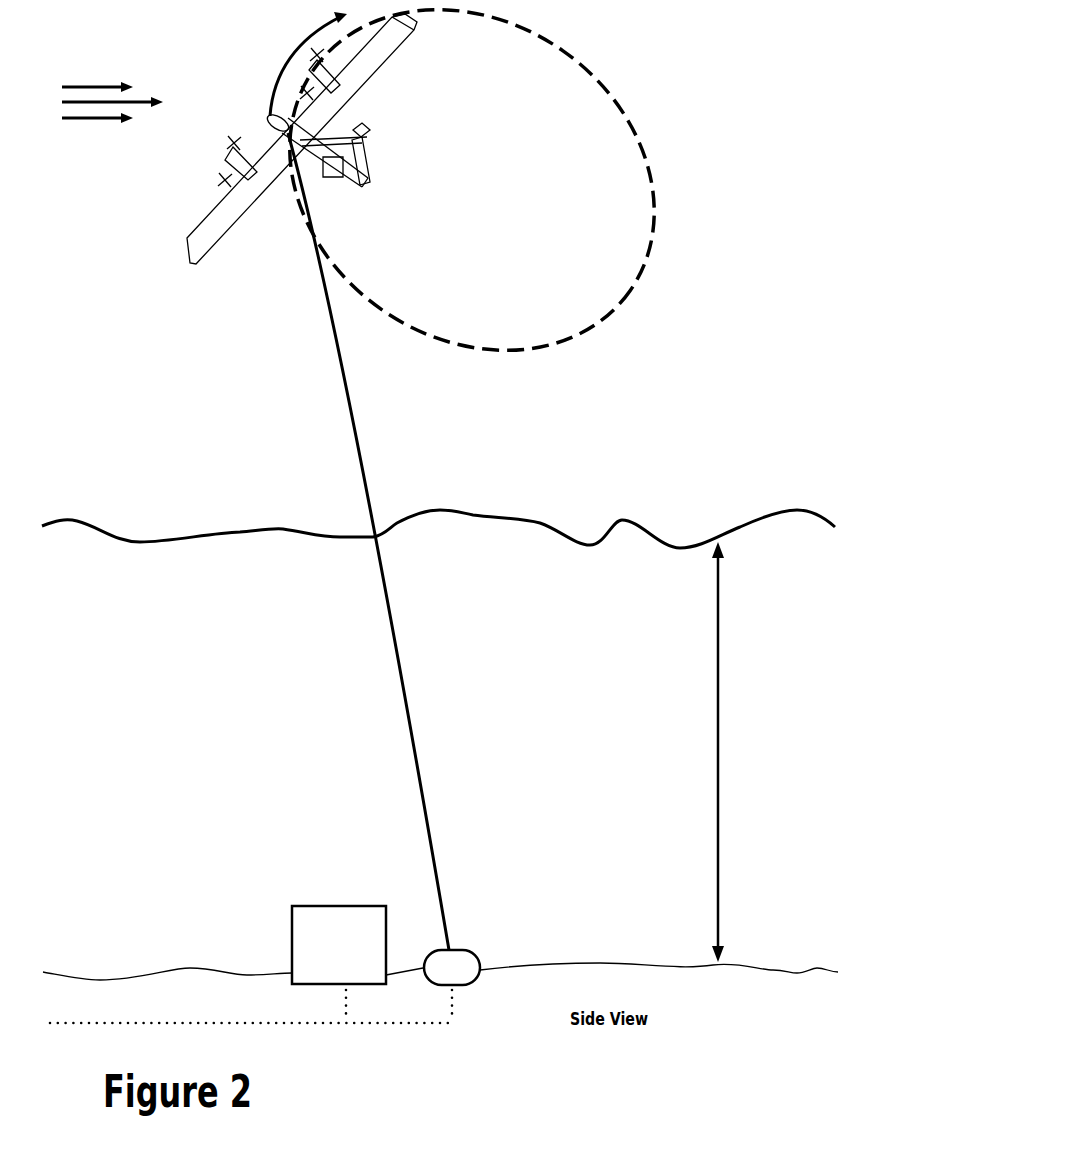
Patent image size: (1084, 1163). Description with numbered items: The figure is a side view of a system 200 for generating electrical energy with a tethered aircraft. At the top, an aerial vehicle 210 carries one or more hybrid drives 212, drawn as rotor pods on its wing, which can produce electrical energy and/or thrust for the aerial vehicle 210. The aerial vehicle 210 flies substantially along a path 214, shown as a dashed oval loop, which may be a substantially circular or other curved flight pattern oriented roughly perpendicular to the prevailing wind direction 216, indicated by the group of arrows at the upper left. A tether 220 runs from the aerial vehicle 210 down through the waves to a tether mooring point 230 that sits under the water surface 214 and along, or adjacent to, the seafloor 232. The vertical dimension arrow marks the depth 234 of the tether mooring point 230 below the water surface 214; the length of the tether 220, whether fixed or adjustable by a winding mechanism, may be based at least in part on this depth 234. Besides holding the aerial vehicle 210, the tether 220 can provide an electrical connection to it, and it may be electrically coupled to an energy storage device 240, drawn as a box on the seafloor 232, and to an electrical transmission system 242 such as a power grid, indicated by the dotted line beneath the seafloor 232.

The system 200 is at (710, 94).
The aerial vehicle 210 is at (286, 139).
The hybrid drives 212 is at (220, 181).
The path 214 is at (650, 255).
The prevailing wind direction 216 is at (92, 87).
The tether 220 is at (347, 388).
The tether mooring point 230 is at (478, 950).
The seafloor 232 is at (557, 968).
The depth 234 is at (717, 663).
The energy storage device 240 is at (292, 920).
The electrical transmission system 242 is at (183, 1023).